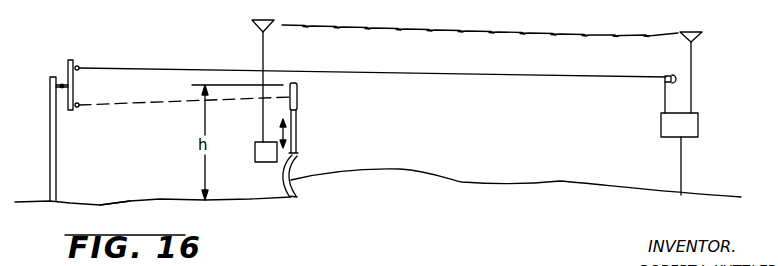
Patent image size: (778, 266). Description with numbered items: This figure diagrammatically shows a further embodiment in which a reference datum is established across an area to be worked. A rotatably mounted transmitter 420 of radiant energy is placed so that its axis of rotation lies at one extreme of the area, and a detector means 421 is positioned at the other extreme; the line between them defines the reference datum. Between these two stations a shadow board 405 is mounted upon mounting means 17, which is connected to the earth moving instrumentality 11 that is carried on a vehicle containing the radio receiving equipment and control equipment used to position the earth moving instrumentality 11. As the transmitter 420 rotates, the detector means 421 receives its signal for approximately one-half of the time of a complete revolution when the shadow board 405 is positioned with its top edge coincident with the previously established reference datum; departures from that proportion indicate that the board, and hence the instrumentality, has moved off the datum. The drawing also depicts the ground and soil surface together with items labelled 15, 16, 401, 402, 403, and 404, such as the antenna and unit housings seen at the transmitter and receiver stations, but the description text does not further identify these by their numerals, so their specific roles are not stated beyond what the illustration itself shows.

The earth moving instrumentality 11 is at (300, 197).
The soil surface 15 is at (462, 182).
The ground 16 is at (135, 197).
The mounting means 17 is at (298, 133).
The transmitter unit 401 is at (698, 118).
The receiver unit 402 is at (257, 152).
The transmitting antenna 403 is at (692, 70).
The receiving antenna 404 is at (262, 50).
The shadow board 405 is at (297, 98).
The transmitter 420 is at (75, 65).
The detector means 421 is at (671, 75).